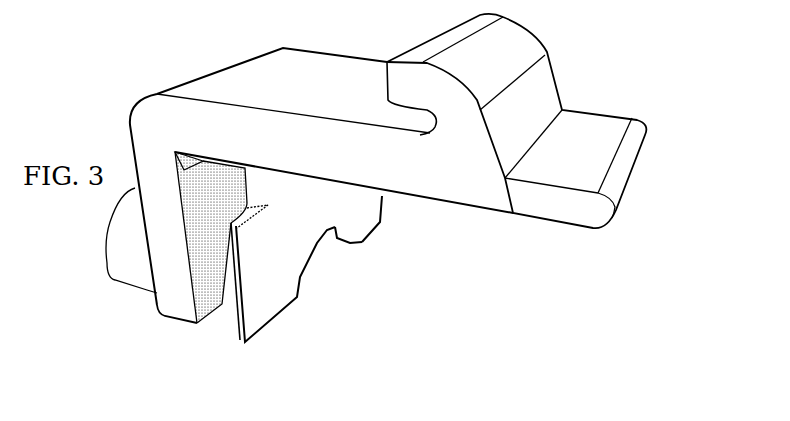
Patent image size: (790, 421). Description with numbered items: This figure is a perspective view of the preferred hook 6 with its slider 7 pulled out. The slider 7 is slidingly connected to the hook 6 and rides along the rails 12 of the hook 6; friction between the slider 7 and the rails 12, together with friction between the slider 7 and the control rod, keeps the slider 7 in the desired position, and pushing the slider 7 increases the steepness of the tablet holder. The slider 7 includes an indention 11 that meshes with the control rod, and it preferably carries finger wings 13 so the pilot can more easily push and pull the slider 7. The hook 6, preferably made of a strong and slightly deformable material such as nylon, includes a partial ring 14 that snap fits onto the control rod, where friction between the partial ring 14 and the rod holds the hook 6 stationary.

The hook 6 is at (126, 93).
The slider 7 is at (352, 213).
The indention 11 is at (318, 245).
The rails 12 is at (455, 200).
The finger wings 13 is at (240, 322).
The partial ring 14 is at (118, 262).